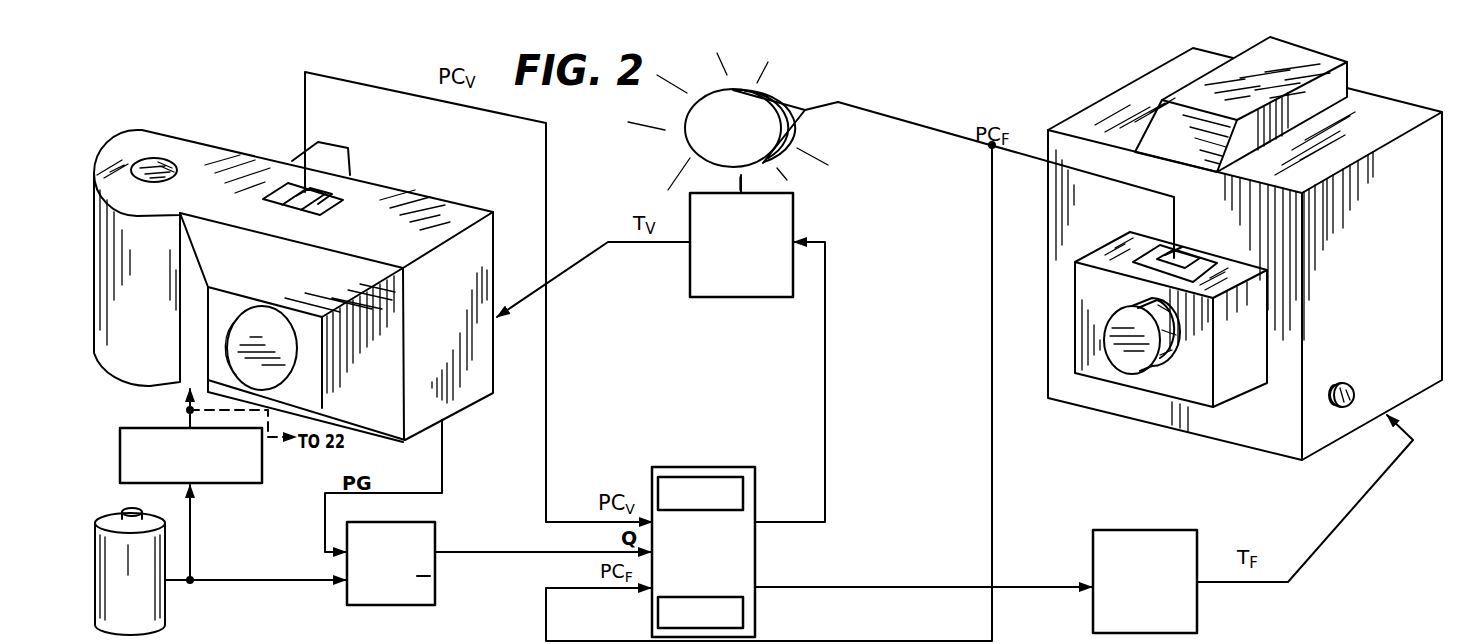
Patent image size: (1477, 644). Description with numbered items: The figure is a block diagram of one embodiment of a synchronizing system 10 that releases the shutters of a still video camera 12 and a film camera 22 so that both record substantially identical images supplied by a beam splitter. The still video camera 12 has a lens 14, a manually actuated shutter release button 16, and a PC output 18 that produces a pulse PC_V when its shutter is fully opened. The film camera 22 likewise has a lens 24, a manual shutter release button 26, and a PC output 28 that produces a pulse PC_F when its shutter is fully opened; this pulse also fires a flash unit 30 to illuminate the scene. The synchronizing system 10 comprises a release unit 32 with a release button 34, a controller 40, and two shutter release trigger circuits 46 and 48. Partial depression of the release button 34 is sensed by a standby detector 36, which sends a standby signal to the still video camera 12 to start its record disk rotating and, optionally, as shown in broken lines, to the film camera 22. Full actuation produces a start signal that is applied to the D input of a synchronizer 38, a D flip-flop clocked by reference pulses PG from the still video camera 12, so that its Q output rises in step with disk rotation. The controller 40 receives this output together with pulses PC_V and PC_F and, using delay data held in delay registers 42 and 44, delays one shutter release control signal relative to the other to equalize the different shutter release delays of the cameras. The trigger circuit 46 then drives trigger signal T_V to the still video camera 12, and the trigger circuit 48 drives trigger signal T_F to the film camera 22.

The synchronizing system 10 is at (708, 391).
The still video camera 12 is at (293, 264).
The lens 14 is at (270, 328).
The shutter release button 16 is at (149, 157).
The PC output 18 is at (312, 192).
The film camera 22 is at (1245, 340).
The lens 24 is at (1145, 357).
The shutter release button 26 is at (1337, 383).
The PC output 28 is at (1178, 257).
The flash unit 30 is at (807, 91).
The release unit 32 is at (149, 560).
The release button 34 is at (133, 509).
The standby detector 36 is at (262, 470).
The synchronizer 38 is at (410, 522).
The controller 40 is at (699, 532).
The delay register 42 is at (720, 510).
The delay register 44 is at (658, 617).
The shutter release trigger circuit 46 is at (741, 297).
The shutter release trigger circuit 48 is at (1128, 530).